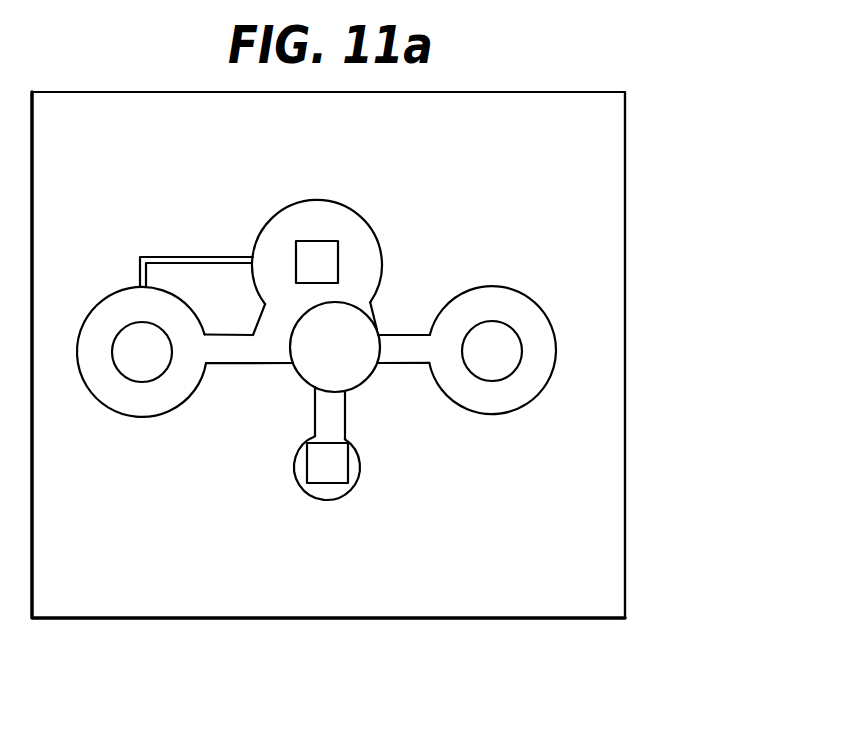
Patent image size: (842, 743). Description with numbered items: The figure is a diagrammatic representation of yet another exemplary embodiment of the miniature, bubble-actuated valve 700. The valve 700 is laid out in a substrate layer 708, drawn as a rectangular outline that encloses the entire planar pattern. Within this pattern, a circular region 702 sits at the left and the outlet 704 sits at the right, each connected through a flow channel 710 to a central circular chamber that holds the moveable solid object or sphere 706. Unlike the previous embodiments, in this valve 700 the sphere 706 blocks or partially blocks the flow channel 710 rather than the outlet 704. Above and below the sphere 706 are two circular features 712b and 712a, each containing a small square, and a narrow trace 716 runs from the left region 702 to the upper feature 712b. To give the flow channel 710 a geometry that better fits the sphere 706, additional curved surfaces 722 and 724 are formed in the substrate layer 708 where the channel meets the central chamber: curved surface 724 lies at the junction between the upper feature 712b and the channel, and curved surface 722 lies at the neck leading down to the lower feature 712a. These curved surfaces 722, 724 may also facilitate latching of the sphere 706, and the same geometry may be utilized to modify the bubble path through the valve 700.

The bubble-actuated valve 700 is at (609, 80).
The first ring-shaped radiating element 702 is at (140, 343).
The outlet 704 is at (495, 342).
The moveable solid object or sphere 706 is at (337, 318).
The substrate layer 708 is at (626, 172).
The flow channel 710 is at (234, 353).
The lower circular pad with square feed 712a is at (323, 470).
The upper circular pad with square feed 712b is at (313, 252).
The conductive trace 716 is at (192, 255).
The curved surface 722 is at (295, 385).
The curved surface 724 is at (386, 322).